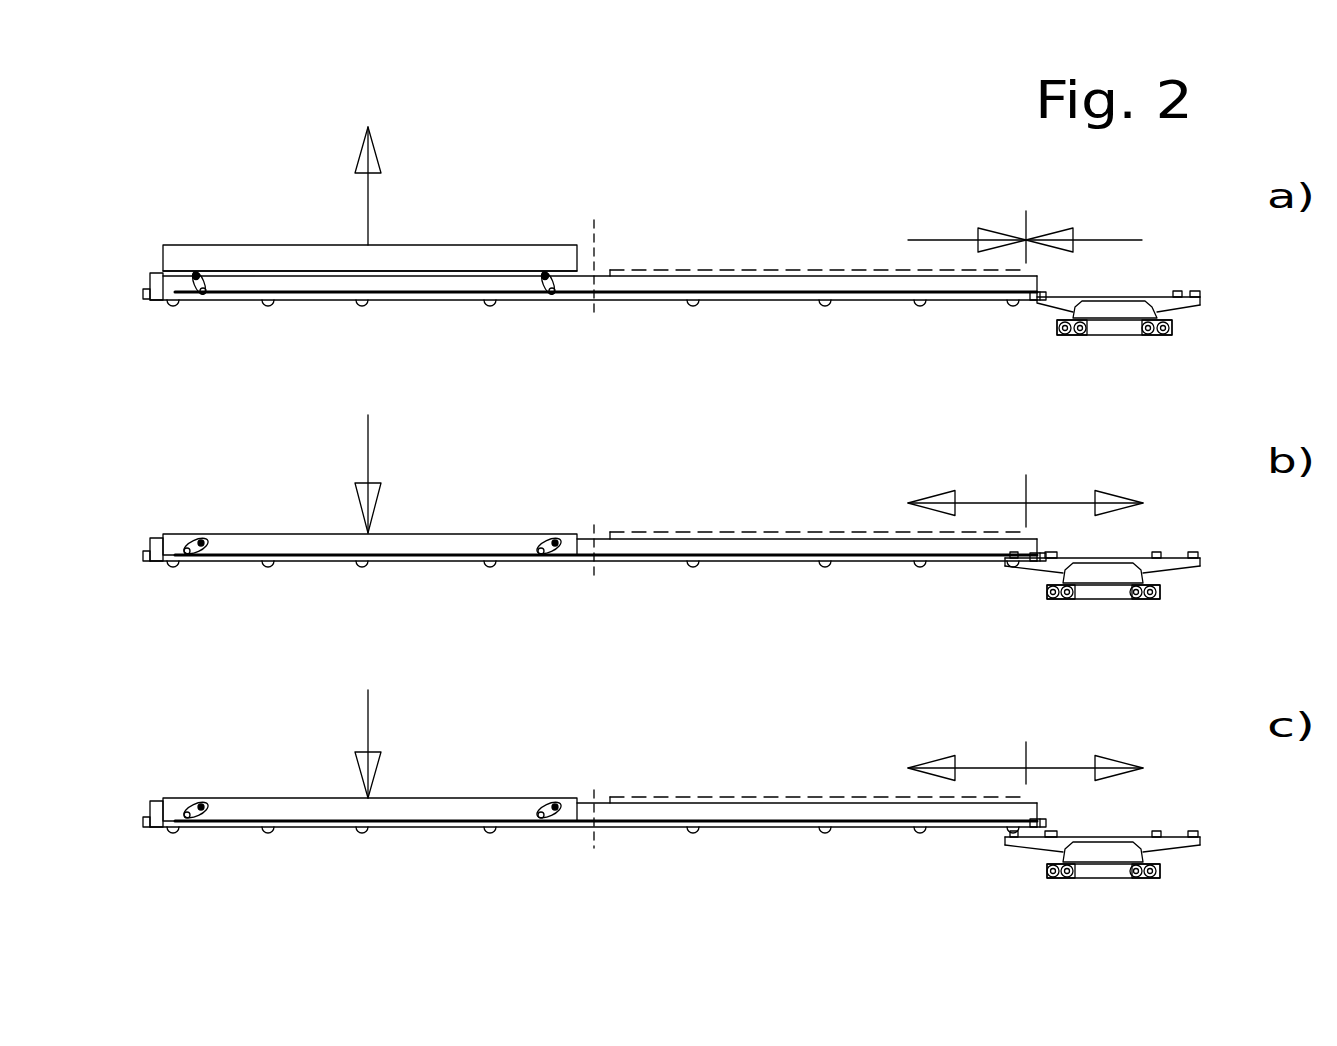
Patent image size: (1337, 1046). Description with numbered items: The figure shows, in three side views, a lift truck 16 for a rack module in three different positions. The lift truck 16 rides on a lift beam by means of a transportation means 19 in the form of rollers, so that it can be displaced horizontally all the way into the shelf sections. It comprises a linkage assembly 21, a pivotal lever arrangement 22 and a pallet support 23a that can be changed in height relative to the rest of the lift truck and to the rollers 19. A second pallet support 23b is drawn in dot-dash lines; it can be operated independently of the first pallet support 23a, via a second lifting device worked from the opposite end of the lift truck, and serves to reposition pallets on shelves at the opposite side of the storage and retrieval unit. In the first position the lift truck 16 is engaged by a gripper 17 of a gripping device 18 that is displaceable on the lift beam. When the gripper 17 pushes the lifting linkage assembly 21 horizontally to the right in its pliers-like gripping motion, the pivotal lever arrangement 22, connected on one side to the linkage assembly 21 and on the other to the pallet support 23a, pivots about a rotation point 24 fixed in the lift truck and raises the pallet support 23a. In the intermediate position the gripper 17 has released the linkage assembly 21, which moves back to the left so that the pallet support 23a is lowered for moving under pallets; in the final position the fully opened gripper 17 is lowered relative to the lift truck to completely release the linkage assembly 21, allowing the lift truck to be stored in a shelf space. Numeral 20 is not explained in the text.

In FIG. 2a, the lift truck 16 is at (688, 277).
In FIG. 2b, the lift truck 16 is at (701, 552).
In FIG. 2c, the lift truck 16 is at (691, 791).
In FIG. 2a, the gripper 17 is at (1037, 305).
In FIG. 2b, the gripper 17 is at (1132, 595).
In FIG. 2c, the gripper 17 is at (1127, 820).
In FIG. 2a, the gripping device 18 is at (1142, 255).
In FIG. 2b, the gripping device 18 is at (1102, 613).
In FIG. 2c, the gripping device 18 is at (1137, 791).
In FIG. 2a, the transportation means 19 is at (172, 303).
In FIG. 2b, the transportation means 19 is at (593, 564).
In FIG. 2c, the transportation means 19 is at (593, 830).
In FIG. 2a, the loading surface 20 is at (448, 225).
In FIG. 2a, the linkage assembly 21 is at (594, 325).
In FIG. 2b, the linkage assembly 21 is at (594, 589).
In FIG. 2c, the linkage assembly 21 is at (594, 766).
In FIG. 2a, the pivotal lever arrangement 22 is at (410, 236).
In FIG. 2b, the pivotal lever arrangement 22 is at (373, 546).
In FIG. 2c, the pivotal lever arrangement 22 is at (405, 763).
In FIG. 2a, the pallet support 23a is at (370, 223).
In FIG. 2b, the pallet support 23a is at (370, 544).
In FIG. 2c, the pallet support 23a is at (370, 809).
In FIG. 2a, the second pallet support 23b is at (818, 226).
In FIG. 2b, the second pallet support 23b is at (815, 535).
In FIG. 2c, the second pallet support 23b is at (815, 800).
In FIG. 2a, the rotation point 24 is at (374, 333).
In FIG. 2b, the rotation point 24 is at (364, 551).
In FIG. 2c, the rotation point 24 is at (338, 761).